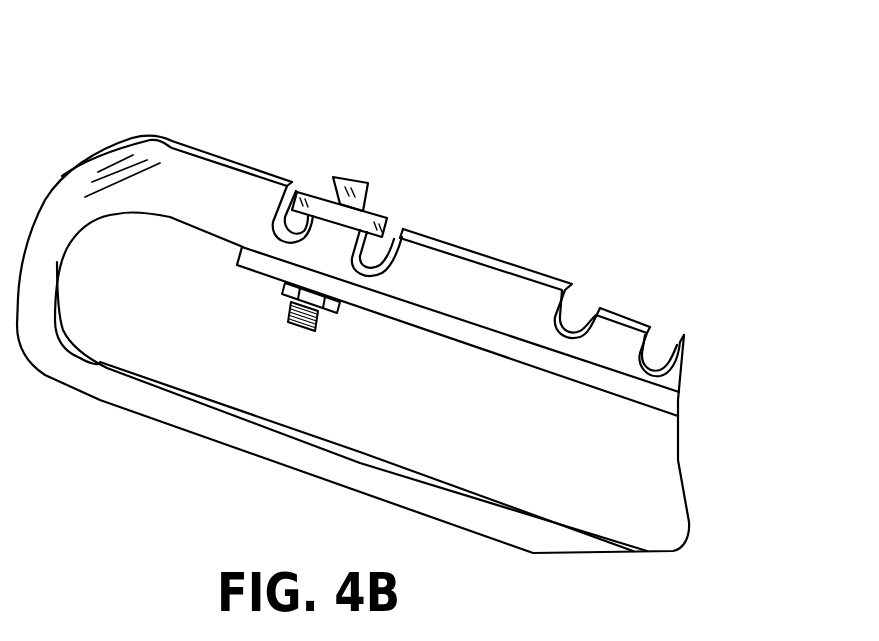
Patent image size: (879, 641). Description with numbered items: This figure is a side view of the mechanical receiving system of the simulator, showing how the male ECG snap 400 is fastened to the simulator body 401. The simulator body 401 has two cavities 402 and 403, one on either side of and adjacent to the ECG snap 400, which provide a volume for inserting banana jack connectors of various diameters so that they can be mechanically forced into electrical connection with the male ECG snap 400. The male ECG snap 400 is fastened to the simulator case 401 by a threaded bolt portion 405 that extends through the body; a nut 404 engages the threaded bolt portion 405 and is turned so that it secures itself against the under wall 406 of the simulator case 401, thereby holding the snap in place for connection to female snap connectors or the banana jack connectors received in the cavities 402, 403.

The male ECG snap 400 is at (345, 145).
The simulator body 401 is at (169, 152).
The cavity 402 is at (295, 157).
The cavity 403 is at (410, 196).
The nut 404 is at (285, 287).
The threaded bolt portion 405 is at (297, 338).
The under wall 406 is at (412, 329).